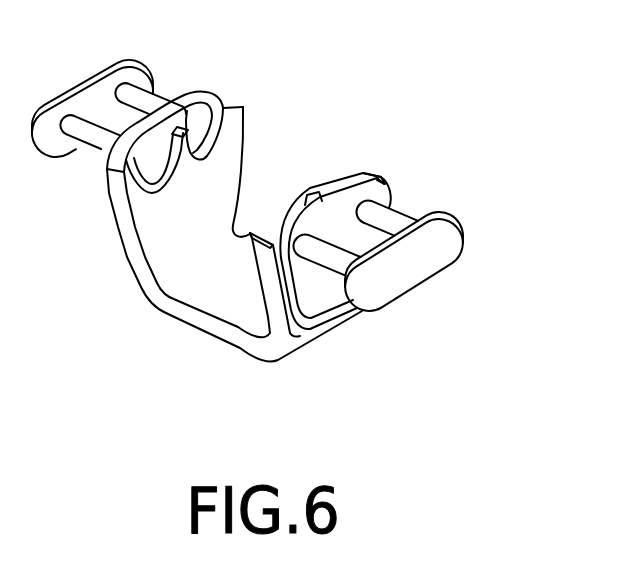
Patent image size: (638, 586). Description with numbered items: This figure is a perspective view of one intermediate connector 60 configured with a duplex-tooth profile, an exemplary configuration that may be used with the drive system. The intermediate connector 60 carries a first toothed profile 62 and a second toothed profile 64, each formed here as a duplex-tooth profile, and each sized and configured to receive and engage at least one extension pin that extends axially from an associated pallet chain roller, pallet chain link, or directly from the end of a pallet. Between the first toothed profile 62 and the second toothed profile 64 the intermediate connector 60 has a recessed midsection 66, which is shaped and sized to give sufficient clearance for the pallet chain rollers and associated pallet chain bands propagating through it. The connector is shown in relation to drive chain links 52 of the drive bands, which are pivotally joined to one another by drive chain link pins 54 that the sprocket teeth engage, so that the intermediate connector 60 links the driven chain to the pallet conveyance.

The drive chain link 52 is at (59, 101).
The drive chain link pin 54 is at (156, 102).
The intermediate connector 60 is at (486, 105).
The first toothed profile 62 is at (118, 200).
The second toothed profile 64 is at (261, 275).
The recessed midsection 66 is at (182, 314).